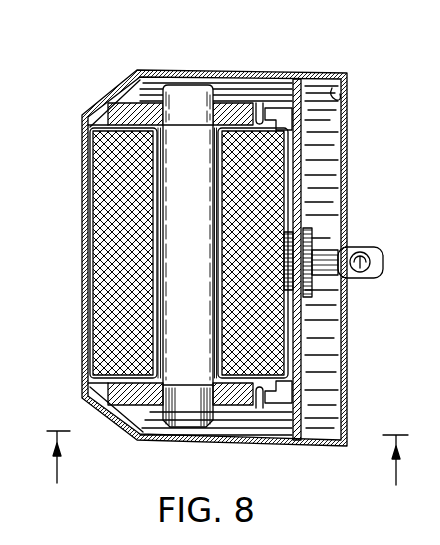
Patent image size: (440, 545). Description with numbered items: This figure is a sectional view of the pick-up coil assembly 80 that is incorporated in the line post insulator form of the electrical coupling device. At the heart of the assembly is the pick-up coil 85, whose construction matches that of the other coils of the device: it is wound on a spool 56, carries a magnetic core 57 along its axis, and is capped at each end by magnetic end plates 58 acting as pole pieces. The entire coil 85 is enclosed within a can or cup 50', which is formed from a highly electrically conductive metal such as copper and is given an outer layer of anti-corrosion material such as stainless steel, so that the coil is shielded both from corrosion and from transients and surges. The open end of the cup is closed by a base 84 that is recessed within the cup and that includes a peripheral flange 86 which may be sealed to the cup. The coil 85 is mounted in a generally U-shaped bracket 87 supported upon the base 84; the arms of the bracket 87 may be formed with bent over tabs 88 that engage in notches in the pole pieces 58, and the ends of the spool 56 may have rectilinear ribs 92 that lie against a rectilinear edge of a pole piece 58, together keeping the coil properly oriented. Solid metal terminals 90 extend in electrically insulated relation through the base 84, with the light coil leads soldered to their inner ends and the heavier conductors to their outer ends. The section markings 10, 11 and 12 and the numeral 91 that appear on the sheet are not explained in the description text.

The coil assembly 80 is at (218, 48).
The cup 50' is at (225, 63).
The magnetic end plate 58 is at (232, 110).
The bent over tab 88 is at (272, 112).
The rectilinear rib 92 is at (300, 125).
The coil bobbin flange 91 is at (268, 130).
The pick-up coil 85 is at (107, 263).
The magnetic core 57 is at (183, 417).
The base 84 is at (305, 100).
The peripheral flange 86 is at (340, 98).
The solid metal terminal 90 is at (349, 256).
The spool 56 is at (138, 380).
The U-shaped bracket 87 is at (238, 410).
The section line 10- 10 is at (223, 458).
The section line 11 is at (434, 267).
The section line 12 is at (432, 332).